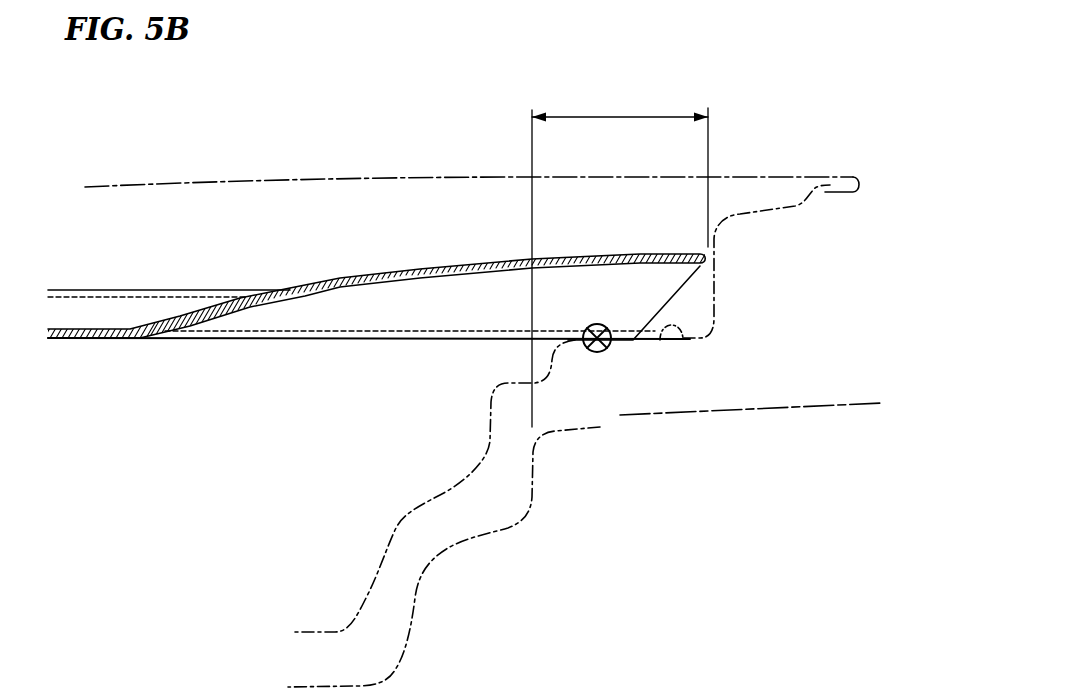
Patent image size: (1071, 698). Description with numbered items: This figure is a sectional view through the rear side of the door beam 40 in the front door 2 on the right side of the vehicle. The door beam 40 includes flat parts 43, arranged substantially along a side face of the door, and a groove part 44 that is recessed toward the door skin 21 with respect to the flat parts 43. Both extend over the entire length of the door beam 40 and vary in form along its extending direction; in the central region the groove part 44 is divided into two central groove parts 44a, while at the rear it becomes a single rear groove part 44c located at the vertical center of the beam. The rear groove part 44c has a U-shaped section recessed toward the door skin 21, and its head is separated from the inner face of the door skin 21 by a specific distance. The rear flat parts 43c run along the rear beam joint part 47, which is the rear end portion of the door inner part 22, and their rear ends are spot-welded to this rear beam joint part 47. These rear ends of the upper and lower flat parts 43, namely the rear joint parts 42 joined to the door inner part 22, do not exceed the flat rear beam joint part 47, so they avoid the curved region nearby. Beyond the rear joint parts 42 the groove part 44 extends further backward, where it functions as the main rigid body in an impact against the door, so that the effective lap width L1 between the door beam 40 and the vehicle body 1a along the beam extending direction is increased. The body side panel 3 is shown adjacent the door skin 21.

The vehicle body 1a is at (749, 398).
The front door 2 is at (871, 130).
The body side panel / door opening flange 3 is at (834, 150).
The door skin 21 is at (748, 165).
The door inner part 22 is at (745, 223).
The door beam 40 is at (288, 280).
The rear joint parts 42 is at (597, 352).
The flat parts 43 is at (410, 221).
The rear flat parts 43c is at (462, 333).
The groove part 44 is at (380, 238).
The central groove parts 44a is at (97, 290).
The rear groove part 44c is at (362, 274).
The rear beam joint part 47 is at (683, 340).
The effective lap width L1 is at (620, 254).